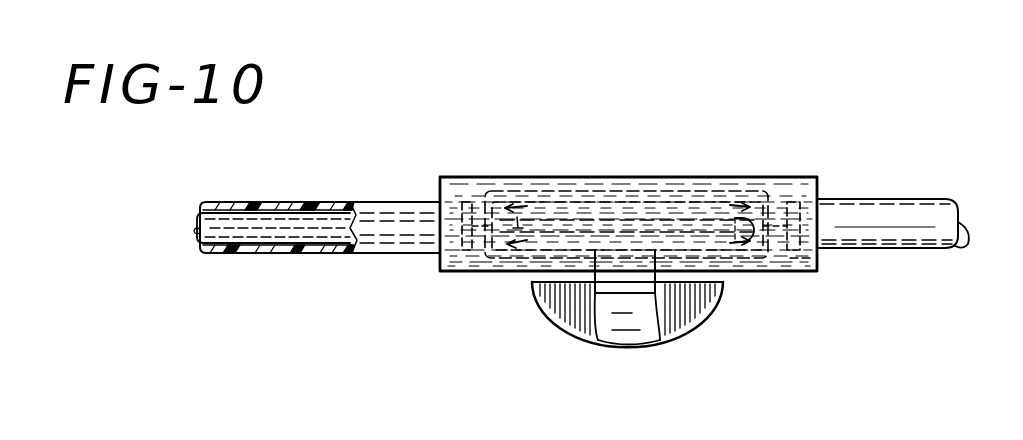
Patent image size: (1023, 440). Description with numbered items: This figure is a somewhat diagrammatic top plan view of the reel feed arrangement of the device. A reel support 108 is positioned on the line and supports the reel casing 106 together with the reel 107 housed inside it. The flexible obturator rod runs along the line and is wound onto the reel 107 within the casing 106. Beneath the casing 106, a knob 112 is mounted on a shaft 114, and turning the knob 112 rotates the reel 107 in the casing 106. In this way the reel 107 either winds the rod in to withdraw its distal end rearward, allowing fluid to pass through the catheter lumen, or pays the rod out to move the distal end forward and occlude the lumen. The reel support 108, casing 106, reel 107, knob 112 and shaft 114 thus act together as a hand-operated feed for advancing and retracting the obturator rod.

The reel casing 106 is at (768, 205).
The reel 107 is at (731, 205).
The reel support 108 is at (798, 272).
The knob 112 is at (567, 315).
The shaft 114 is at (630, 297).